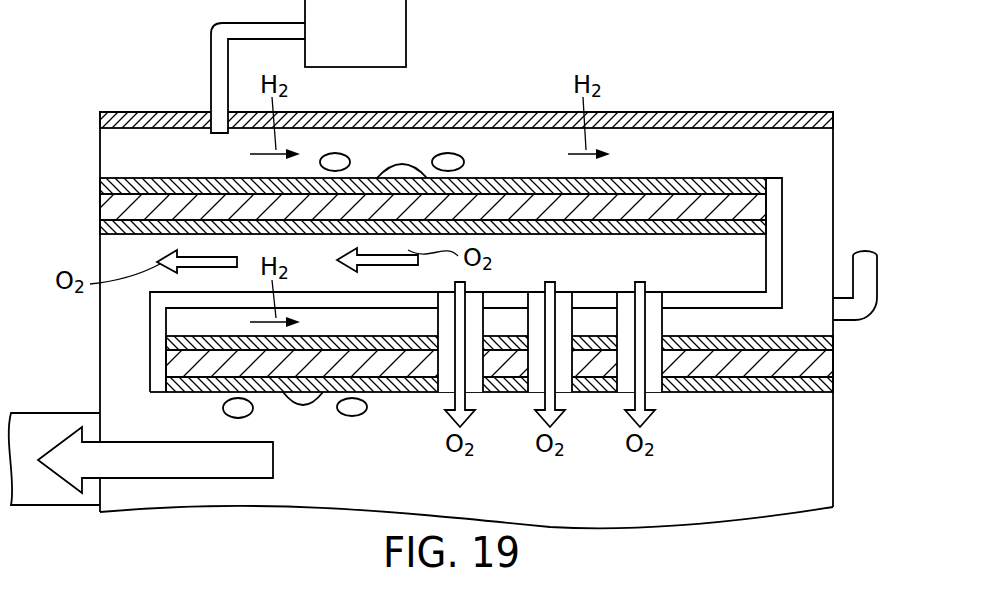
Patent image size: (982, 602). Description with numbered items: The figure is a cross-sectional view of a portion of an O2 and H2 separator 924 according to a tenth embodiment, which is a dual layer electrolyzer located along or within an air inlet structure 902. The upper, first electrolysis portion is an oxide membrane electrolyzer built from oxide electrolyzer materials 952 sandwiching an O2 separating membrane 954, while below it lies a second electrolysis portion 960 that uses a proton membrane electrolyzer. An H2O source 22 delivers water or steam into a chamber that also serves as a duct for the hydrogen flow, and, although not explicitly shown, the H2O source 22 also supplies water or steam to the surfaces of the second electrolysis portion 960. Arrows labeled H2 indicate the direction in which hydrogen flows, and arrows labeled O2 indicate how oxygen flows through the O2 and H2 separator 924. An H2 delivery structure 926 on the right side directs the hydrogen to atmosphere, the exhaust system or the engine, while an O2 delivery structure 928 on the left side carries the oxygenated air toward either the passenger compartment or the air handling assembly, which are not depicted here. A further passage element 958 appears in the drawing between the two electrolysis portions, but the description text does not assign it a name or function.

The H2O source 22 is at (406, 24).
The air inlet structure 902 is at (110, 121).
The O2 and H2 separator 924 is at (665, 56).
The H2 delivery structure 926 is at (878, 278).
The O2 delivery structure 928 is at (50, 506).
The oxide electrolyzer materials 952 is at (110, 185).
The O2 separating membrane 954 is at (125, 207).
The gas conduit 958 is at (709, 300).
The second electrolysis portion 960 is at (845, 335).